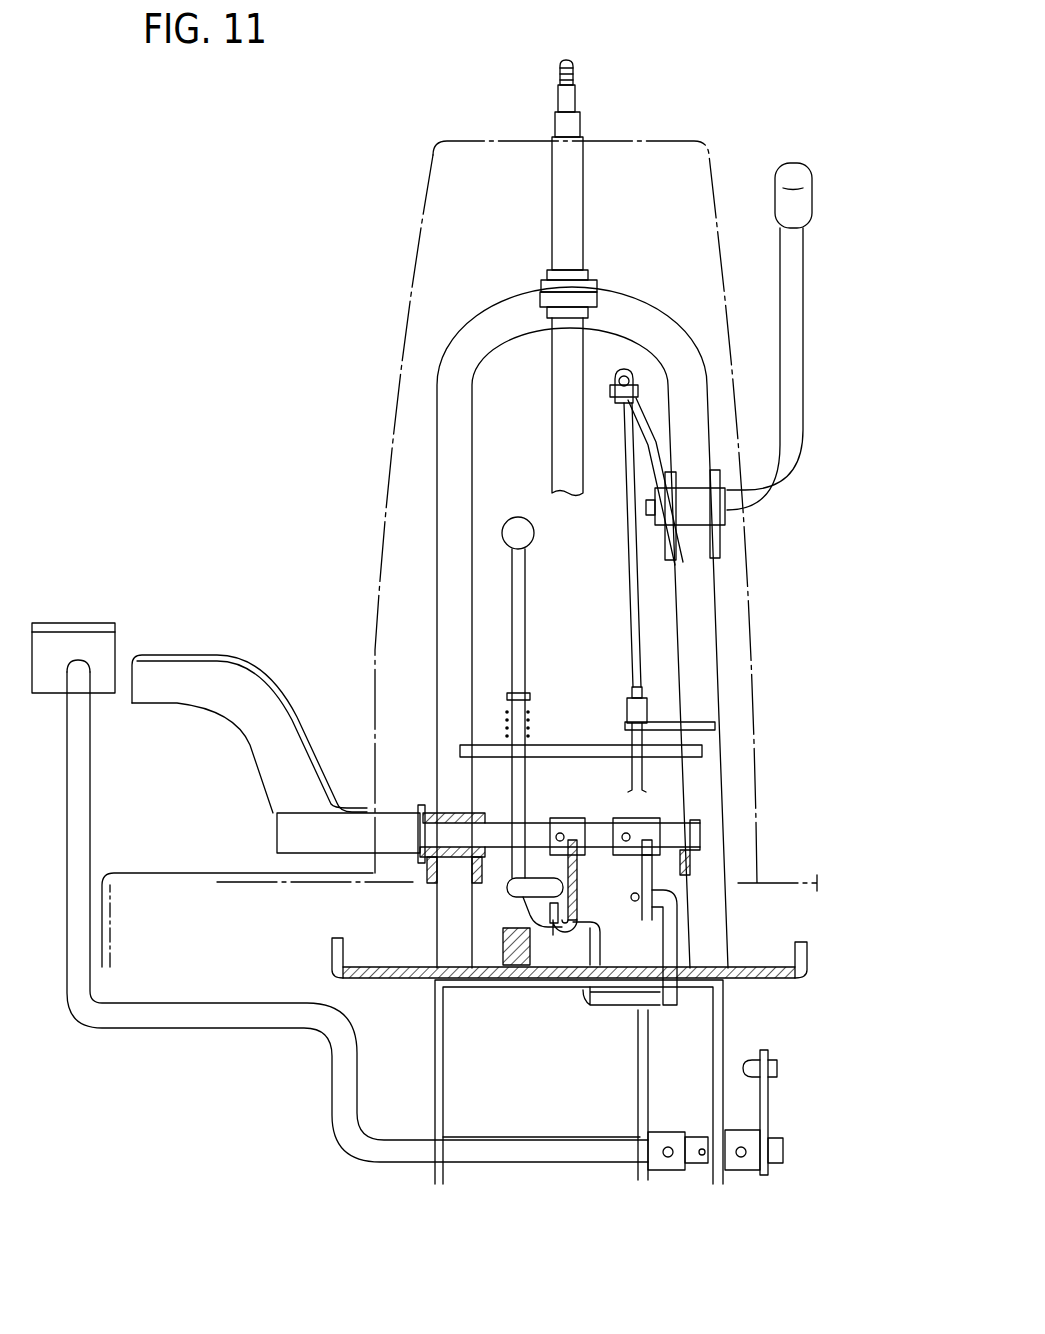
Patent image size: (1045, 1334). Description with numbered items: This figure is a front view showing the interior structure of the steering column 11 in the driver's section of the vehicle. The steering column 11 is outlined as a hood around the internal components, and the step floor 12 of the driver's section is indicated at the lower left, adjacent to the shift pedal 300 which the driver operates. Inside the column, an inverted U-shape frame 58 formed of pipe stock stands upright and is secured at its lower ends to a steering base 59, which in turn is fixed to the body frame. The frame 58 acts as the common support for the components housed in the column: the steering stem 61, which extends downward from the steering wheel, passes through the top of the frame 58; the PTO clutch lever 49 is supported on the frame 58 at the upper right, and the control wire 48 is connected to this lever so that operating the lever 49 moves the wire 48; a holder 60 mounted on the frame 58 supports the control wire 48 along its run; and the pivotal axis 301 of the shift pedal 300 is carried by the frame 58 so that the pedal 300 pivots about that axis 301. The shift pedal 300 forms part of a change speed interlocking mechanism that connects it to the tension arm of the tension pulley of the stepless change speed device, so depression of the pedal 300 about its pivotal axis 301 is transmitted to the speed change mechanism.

The steering column 11 is at (413, 237).
The step floor 12 is at (177, 873).
The control wire 48 is at (630, 545).
The PTO clutch lever 49 is at (780, 170).
The inverted U-shape frame 58 is at (500, 298).
The steering base 59 is at (400, 978).
The holder 60 is at (672, 720).
The steering stem 61 is at (560, 100).
The shift pedal 300 is at (217, 655).
The pivotal axis 301 is at (440, 800).